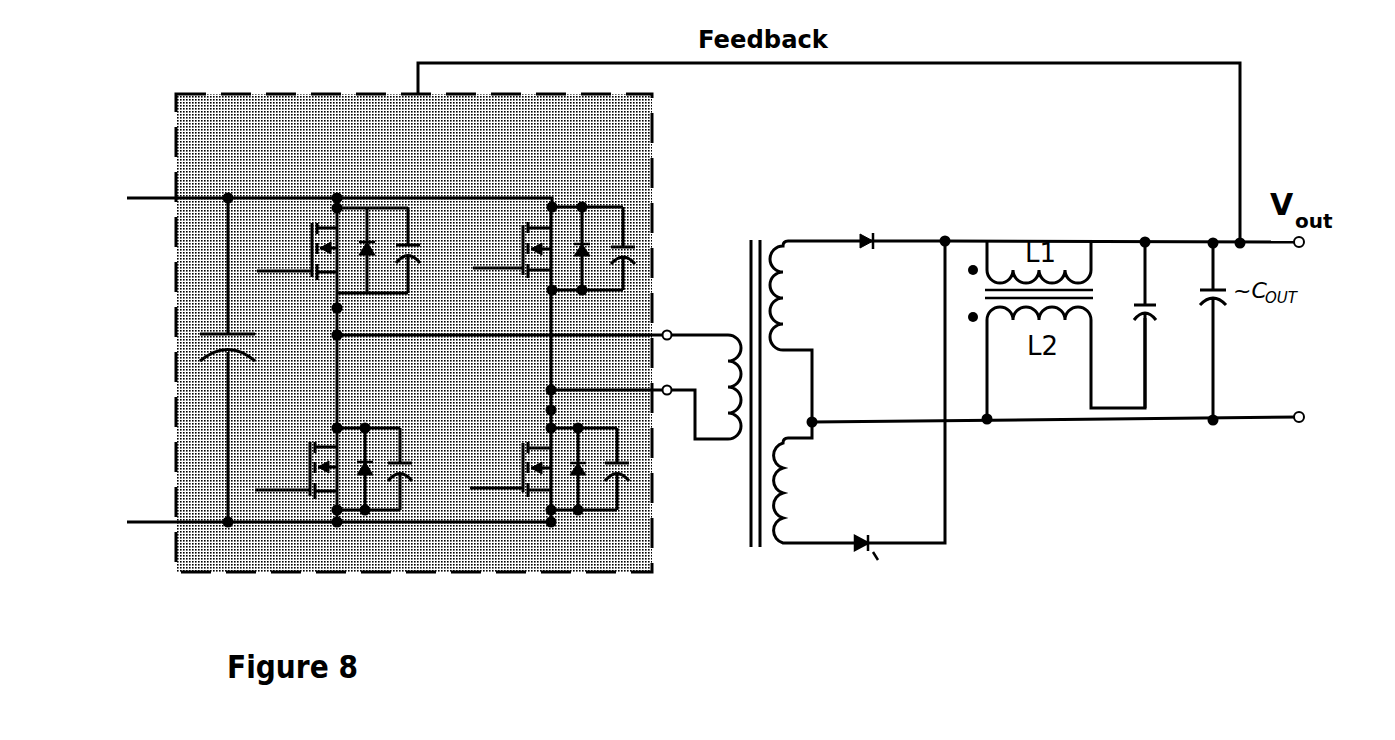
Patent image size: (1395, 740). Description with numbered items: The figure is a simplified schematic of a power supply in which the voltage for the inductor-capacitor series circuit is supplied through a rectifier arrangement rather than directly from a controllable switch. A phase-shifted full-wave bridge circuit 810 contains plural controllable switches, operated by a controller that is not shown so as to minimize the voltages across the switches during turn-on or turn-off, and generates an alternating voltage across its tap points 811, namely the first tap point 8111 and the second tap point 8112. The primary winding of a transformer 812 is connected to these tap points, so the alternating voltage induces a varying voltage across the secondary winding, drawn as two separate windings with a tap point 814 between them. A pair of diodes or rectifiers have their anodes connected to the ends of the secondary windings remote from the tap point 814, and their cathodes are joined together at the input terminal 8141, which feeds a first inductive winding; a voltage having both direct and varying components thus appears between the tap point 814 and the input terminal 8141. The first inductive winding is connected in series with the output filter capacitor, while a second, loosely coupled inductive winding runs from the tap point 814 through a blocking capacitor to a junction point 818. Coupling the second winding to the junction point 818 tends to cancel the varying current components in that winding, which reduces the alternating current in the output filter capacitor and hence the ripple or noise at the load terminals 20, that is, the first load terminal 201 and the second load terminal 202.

The full-wave bridge circuit 810 is at (330, 572).
The tap points 811 is at (539, 387).
The first tap point 8111 is at (667, 331).
The second tap point 8112 is at (667, 394).
The transformer 812 is at (770, 600).
The tap point 814 is at (815, 419).
The input terminal 8141 is at (946, 238).
The junction point 818 is at (1153, 234).
The load terminals 20 is at (1332, 337).
The first load terminal 201 is at (1305, 243).
The second load terminal 202 is at (1305, 417).